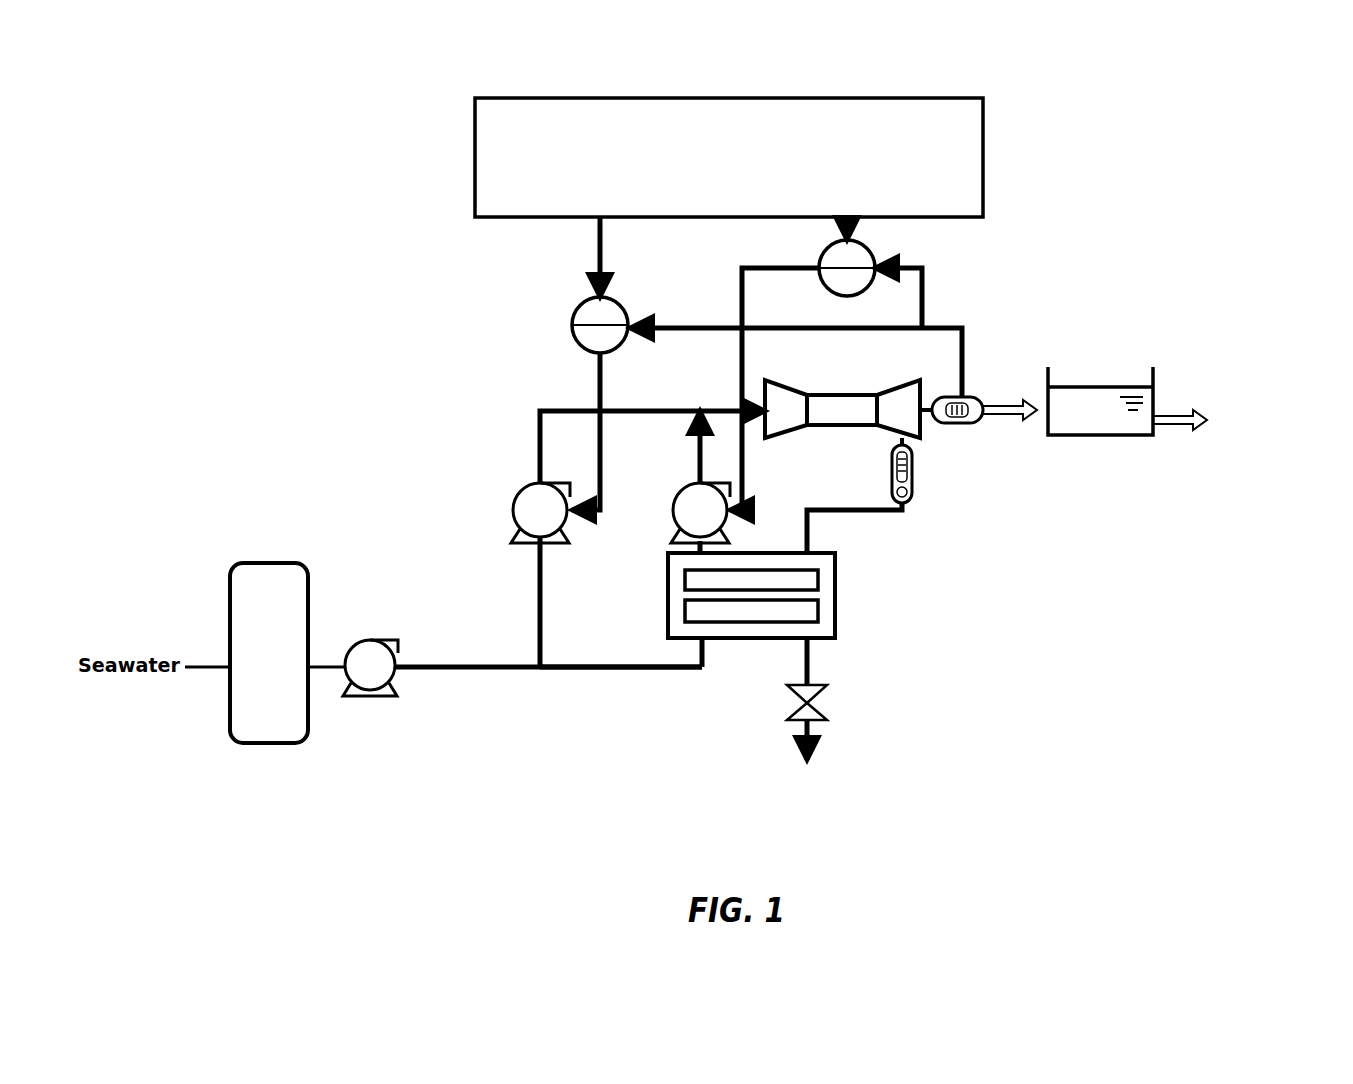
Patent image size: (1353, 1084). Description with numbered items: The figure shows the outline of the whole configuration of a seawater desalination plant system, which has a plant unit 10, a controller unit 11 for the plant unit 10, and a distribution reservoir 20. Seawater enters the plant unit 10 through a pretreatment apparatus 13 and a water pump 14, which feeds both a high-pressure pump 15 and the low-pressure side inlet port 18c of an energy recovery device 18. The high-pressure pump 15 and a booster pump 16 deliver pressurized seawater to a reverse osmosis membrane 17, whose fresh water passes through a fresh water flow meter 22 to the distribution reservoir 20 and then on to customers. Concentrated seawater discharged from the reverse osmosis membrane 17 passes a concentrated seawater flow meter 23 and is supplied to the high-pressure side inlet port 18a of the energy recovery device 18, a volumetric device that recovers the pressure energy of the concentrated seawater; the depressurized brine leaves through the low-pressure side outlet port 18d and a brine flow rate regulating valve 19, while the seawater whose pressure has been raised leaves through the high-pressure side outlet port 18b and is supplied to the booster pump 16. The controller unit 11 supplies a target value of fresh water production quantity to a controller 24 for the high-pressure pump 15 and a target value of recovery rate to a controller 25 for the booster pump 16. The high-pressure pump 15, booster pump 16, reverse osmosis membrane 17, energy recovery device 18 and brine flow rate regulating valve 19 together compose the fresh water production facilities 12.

The plant unit 10 is at (372, 392).
The controller unit 11 is at (985, 147).
The fresh water production facilities 12 is at (610, 712).
The pretreatment apparatus 13 is at (265, 563).
The water pump 14 is at (360, 640).
The high-pressure pump 15 is at (515, 490).
The booster pump 16 is at (675, 520).
The reverse osmosis membrane 17 is at (812, 440).
The energy recovery device 18 is at (840, 625).
The high-pressure side inlet port 18a is at (808, 548).
The high-pressure side outlet port 18b is at (718, 545).
The low-pressure side inlet port 18c is at (712, 641).
The low-pressure side outlet port 18d is at (810, 648).
The brine flow rate regulating valve 19 is at (830, 716).
The distribution reservoir 20 is at (1110, 386).
The fresh water flow meter 22 is at (965, 396).
The concentrated seawater flow meter 23 is at (890, 466).
The controller for the high-pressure pump 24 is at (578, 311).
The controller for the booster pump 25 is at (878, 253).